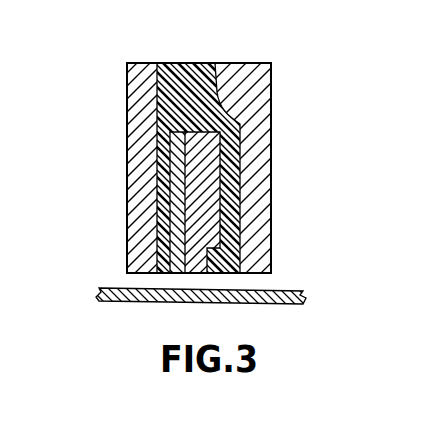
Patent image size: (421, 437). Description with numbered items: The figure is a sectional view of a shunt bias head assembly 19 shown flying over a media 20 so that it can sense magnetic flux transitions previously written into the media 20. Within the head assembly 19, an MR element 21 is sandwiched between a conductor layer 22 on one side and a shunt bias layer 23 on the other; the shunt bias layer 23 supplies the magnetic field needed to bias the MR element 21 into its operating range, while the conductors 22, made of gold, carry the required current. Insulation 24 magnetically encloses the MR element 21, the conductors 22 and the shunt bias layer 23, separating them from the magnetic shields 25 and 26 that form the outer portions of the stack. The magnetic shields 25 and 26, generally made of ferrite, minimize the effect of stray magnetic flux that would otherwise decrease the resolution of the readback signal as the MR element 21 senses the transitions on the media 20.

The shunt bias head assembly 19 is at (119, 114).
The media 20 is at (105, 288).
The MR element 21 is at (215, 65).
The conductor layer 22 is at (215, 167).
The shunt bias layer 23 is at (197, 132).
The insulation 24 is at (177, 132).
The magnetic shield 25 is at (135, 76).
The magnetic shield 26 is at (260, 108).